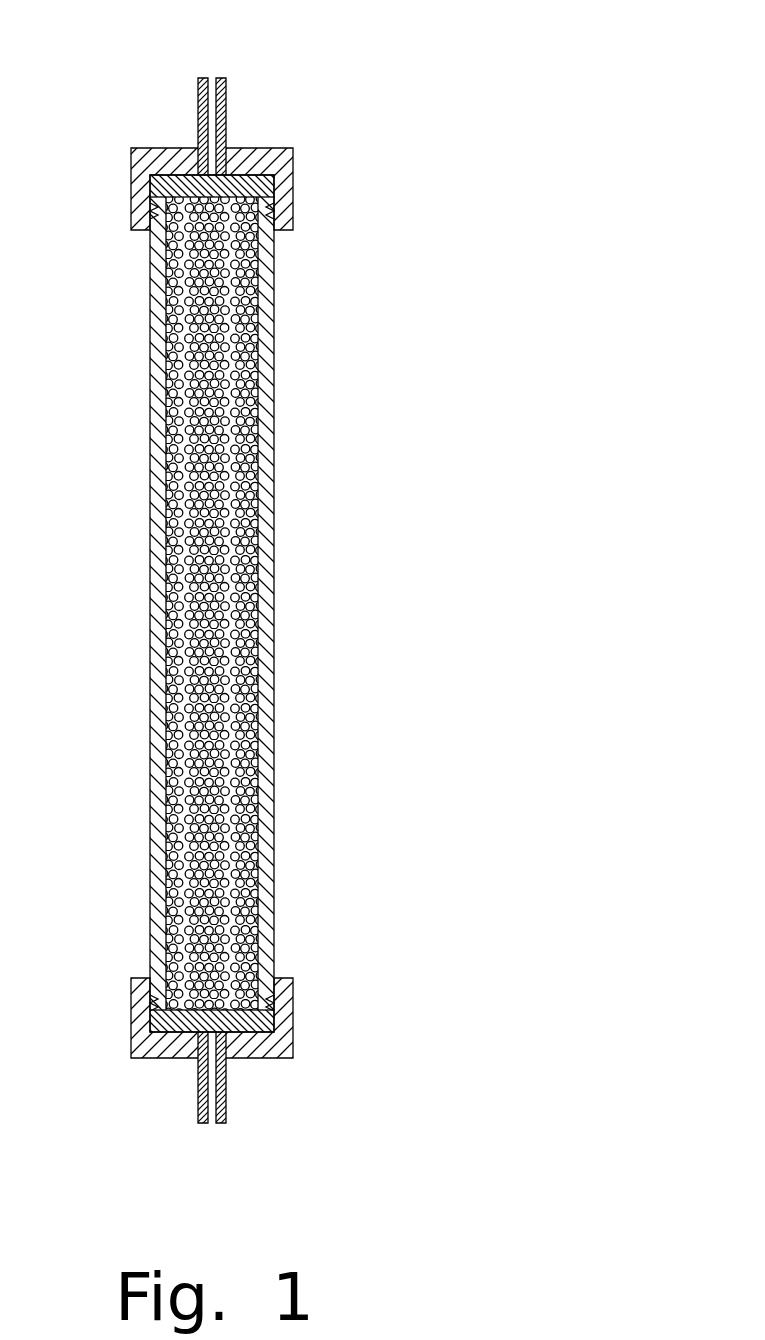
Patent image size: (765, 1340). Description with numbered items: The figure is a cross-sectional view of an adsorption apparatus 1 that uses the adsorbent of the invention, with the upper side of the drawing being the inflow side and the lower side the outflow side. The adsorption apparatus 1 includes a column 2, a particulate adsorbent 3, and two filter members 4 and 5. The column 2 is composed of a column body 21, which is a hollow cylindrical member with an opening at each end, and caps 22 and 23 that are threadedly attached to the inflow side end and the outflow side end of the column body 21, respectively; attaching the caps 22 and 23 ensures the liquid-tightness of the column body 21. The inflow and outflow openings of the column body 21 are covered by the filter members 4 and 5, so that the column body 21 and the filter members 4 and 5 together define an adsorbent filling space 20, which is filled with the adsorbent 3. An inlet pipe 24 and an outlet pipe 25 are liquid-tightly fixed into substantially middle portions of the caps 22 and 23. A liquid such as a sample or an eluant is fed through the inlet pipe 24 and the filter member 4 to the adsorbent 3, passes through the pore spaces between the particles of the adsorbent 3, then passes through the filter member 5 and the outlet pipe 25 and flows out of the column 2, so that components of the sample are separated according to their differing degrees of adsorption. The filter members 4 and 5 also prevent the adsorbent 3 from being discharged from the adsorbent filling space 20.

The adsorption apparatus 1 is at (250, 577).
The column 2 is at (223, 598).
The particulate adsorbent 3 is at (165, 329).
The filter member 4 is at (293, 181).
The filter member 5 is at (295, 1013).
The adsorbent filling space 20 is at (241, 336).
The column body 21 is at (263, 551).
The cap 22 is at (158, 160).
The cap 23 is at (266, 1045).
The inlet pipe 24 is at (226, 109).
The outlet pipe 25 is at (201, 1097).